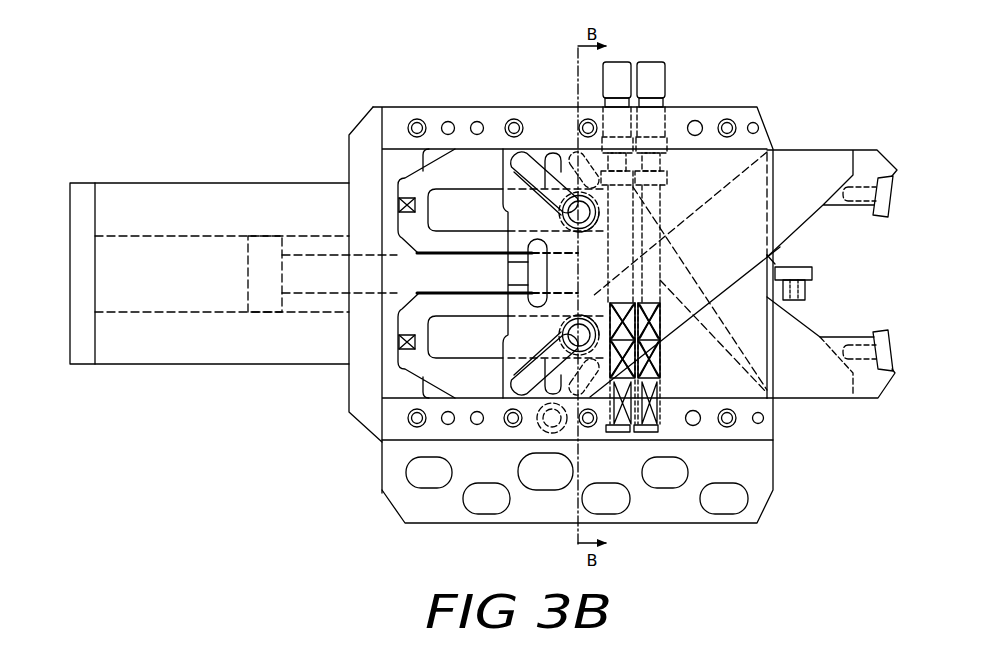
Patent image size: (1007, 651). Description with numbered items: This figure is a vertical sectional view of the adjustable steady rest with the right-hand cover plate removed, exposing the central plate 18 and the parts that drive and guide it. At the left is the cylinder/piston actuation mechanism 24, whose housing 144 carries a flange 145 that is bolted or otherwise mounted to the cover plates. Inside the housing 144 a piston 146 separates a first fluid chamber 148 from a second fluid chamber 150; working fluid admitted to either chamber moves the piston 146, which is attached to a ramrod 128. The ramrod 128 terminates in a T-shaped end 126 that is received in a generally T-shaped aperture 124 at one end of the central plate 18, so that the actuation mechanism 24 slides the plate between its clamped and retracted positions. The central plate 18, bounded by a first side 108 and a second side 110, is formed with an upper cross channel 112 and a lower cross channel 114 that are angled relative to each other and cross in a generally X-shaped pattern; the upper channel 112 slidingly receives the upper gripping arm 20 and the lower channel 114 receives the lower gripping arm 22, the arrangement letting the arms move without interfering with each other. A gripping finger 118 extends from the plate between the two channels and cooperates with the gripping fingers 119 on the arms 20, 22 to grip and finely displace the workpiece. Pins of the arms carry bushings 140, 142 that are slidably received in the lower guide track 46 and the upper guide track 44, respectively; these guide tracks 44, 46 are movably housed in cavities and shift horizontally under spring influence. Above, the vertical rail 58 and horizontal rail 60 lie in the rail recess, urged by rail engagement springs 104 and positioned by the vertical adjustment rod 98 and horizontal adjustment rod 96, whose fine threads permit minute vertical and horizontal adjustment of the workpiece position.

The central plate 18 is at (813, 290).
The upper gripping arm 20 is at (899, 164).
The lower gripping arm 22 is at (884, 401).
The cylinder/piston actuation mechanism 24 is at (57, 107).
The upper guide track 44 is at (439, 155).
The lower guide track 46 is at (446, 398).
The vertical rail 58 is at (698, 162).
The horizontal rail 60 is at (653, 221).
The horizontal threaded adjustment rod 96 is at (629, 207).
The vertical threaded adjustment rod 98 is at (629, 156).
The rail engagement springs 104 is at (665, 415).
The first side of central plate 108 is at (731, 184).
The second side of central plate 110 is at (700, 379).
The upper cross channel 112 is at (384, 396).
The lower cross channel 114 is at (720, 346).
The gripping finger 118 is at (820, 265).
The gripping finger of gripping arm 119 is at (895, 215).
The T-shaped aperture 124 is at (524, 302).
The T-shaped end of ramrod 126 is at (537, 270).
The ramrod 128 is at (425, 278).
The bushing 140 is at (575, 197).
The bushing 142 is at (569, 357).
The housing 144 is at (177, 180).
The flange 145 is at (346, 158).
The piston 146 is at (254, 283).
The first fluid chamber 148 is at (152, 280).
The second fluid chamber 150 is at (311, 310).